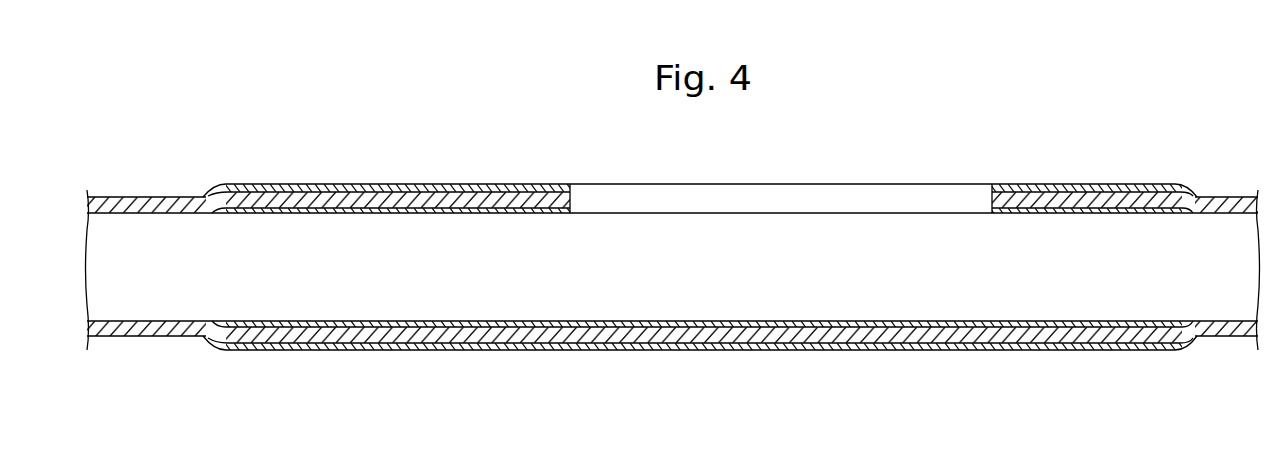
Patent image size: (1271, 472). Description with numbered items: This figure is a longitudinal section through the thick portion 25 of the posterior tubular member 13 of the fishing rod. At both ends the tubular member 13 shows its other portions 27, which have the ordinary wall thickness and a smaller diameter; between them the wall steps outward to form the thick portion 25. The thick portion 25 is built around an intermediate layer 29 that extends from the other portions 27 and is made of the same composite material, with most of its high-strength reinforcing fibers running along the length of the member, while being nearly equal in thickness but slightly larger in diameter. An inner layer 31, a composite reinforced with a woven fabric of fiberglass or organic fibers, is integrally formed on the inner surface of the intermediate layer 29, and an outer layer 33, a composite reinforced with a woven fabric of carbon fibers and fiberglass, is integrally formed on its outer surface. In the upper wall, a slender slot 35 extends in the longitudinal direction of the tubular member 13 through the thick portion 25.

The posterior tubular member 13 is at (137, 194).
The thick portion 25 is at (533, 365).
The other portions 27 is at (157, 337).
The intermediate layer 29 is at (648, 345).
The inner layer 31 is at (945, 322).
The outer layer 33 is at (777, 345).
The slot 35 is at (848, 195).